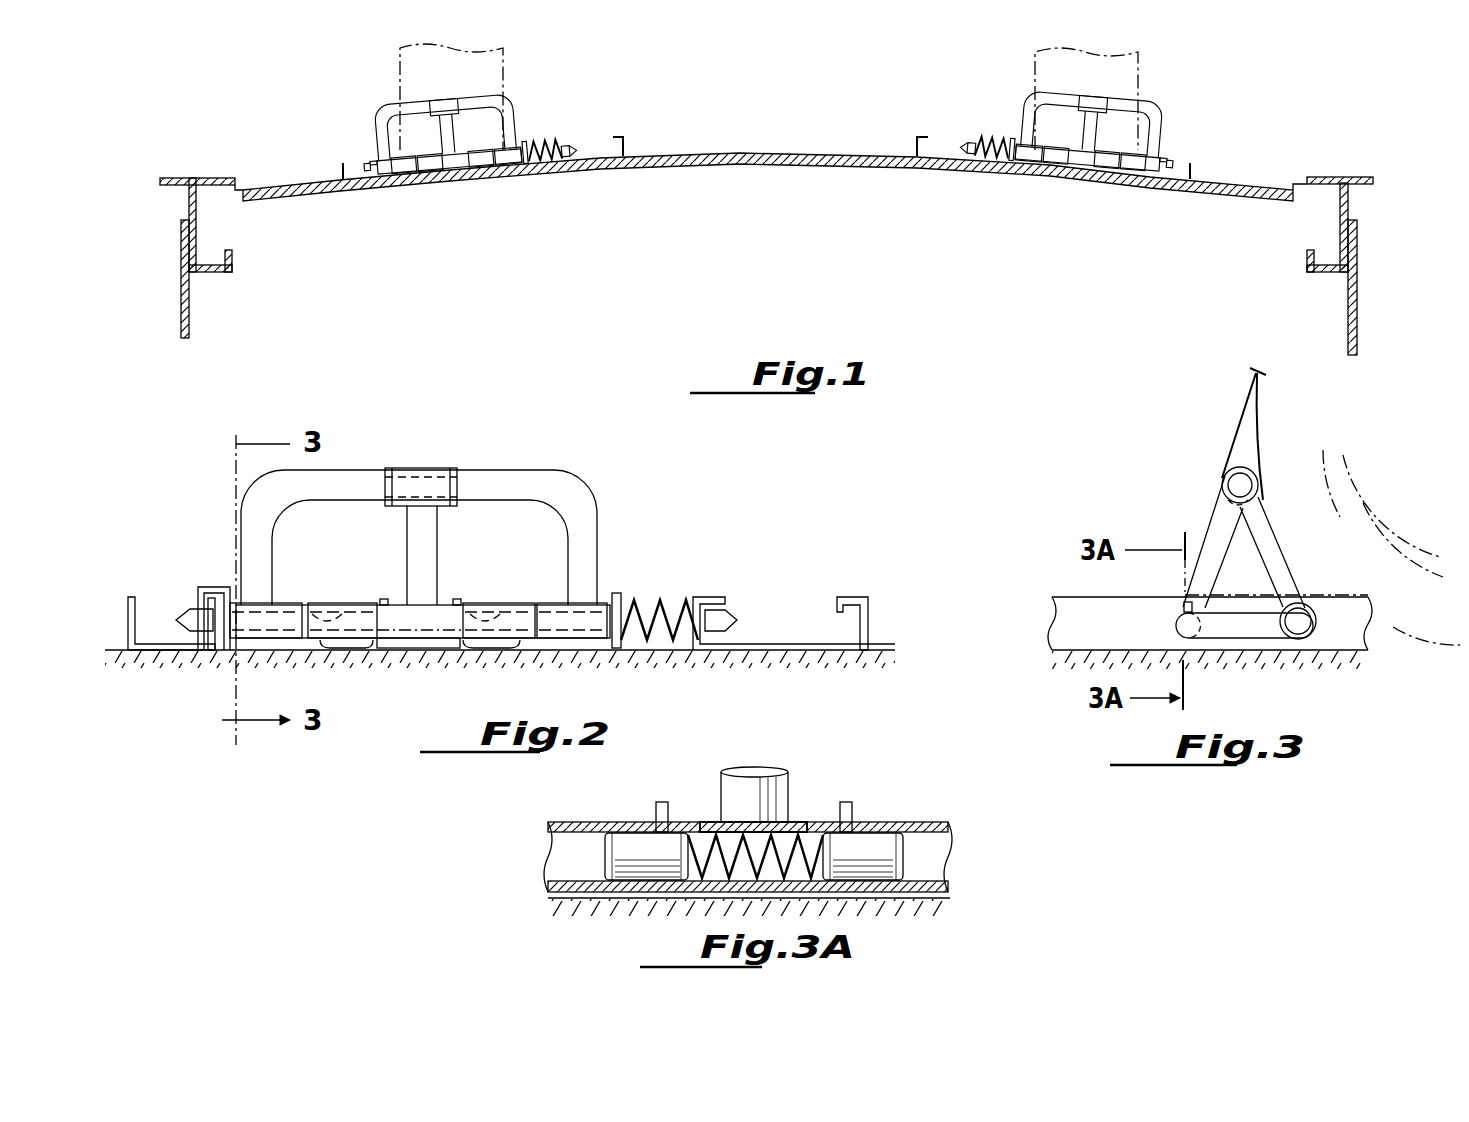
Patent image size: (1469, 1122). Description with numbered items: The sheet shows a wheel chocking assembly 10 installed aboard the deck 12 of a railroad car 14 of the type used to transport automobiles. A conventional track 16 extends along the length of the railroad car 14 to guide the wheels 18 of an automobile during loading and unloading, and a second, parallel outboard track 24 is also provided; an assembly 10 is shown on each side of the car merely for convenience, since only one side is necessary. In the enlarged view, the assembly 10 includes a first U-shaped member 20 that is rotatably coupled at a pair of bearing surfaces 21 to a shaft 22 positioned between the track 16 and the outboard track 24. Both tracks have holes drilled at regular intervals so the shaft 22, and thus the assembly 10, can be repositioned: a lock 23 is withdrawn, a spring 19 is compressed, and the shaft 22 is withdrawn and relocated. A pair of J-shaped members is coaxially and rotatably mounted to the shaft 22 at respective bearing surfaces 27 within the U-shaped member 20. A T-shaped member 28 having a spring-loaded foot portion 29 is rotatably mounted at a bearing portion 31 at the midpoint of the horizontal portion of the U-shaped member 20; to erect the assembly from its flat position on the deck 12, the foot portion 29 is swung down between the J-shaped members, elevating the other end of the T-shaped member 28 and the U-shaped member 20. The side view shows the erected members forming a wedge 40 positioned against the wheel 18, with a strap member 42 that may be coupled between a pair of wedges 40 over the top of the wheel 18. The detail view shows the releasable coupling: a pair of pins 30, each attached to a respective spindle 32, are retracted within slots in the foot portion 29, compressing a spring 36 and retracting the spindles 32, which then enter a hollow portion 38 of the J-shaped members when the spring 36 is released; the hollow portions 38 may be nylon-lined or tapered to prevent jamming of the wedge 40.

In FIG. 1, the wheel chocking assembly 10 is at (582, 100).
In FIG. 1, the deck 12 is at (745, 160).
In FIG. 2, the deck 12 is at (876, 655).
In FIG. 3, the deck 12 is at (1210, 633).
In FIG. 1, the railroad car 14 is at (1372, 240).
In FIG. 1, the track 16 is at (623, 137).
In FIG. 2, the track 16 is at (852, 597).
In FIG. 3, the track 16 is at (1060, 612).
In FIG. 1, the wheels 18 is at (415, 65).
In FIG. 3, the wheels 18 is at (1355, 487).
In FIG. 1, the spring 19 is at (533, 152).
In FIG. 2, the spring 19 is at (640, 607).
In FIG. 2, the first U-shaped member 20 is at (585, 512).
In FIG. 2, the bearing surfaces 21 is at (300, 612).
In FIG. 3, the bearing surfaces 21 is at (1305, 632).
In FIG. 2, the shaft 22 is at (187, 612).
In FIG. 3, the shaft 22 is at (1300, 618).
In FIG. 2, the lock 23 is at (222, 587).
In FIG. 1, the outboard track 24 is at (343, 162).
In FIG. 2, the outboard track 24 is at (130, 612).
In FIG. 2, the bearing surfaces 27 is at (340, 614).
In FIG. 3A, the T-shaped member 28 is at (742, 782).
In FIG. 3A, the foot portion 29 is at (712, 824).
In FIG. 3, the pins 30 is at (1185, 608).
In FIG. 3A, the pins 30 is at (660, 808).
In FIG. 2, the bearing portion 31 is at (440, 470).
In FIG. 3A, the spindles 32 is at (640, 847).
In FIG. 3A, the spring 36 is at (787, 847).
In FIG. 3A, the hollow portion 38 is at (948, 838).
In FIG. 3, the wedge 40 is at (1200, 500).
In FIG. 3, the strap member 42 is at (1240, 432).